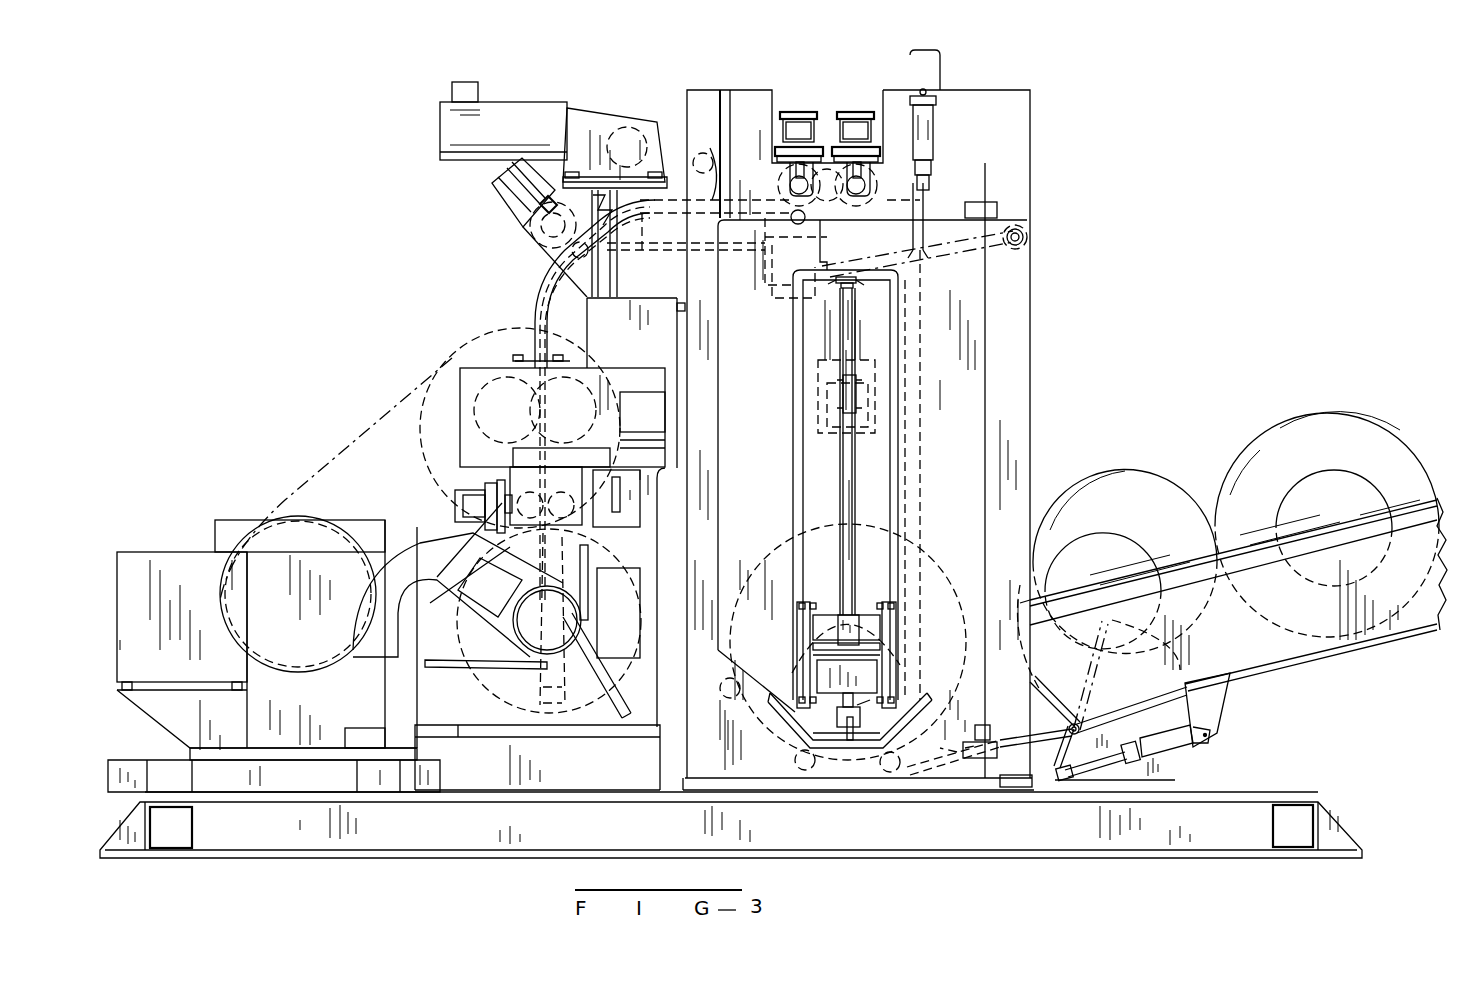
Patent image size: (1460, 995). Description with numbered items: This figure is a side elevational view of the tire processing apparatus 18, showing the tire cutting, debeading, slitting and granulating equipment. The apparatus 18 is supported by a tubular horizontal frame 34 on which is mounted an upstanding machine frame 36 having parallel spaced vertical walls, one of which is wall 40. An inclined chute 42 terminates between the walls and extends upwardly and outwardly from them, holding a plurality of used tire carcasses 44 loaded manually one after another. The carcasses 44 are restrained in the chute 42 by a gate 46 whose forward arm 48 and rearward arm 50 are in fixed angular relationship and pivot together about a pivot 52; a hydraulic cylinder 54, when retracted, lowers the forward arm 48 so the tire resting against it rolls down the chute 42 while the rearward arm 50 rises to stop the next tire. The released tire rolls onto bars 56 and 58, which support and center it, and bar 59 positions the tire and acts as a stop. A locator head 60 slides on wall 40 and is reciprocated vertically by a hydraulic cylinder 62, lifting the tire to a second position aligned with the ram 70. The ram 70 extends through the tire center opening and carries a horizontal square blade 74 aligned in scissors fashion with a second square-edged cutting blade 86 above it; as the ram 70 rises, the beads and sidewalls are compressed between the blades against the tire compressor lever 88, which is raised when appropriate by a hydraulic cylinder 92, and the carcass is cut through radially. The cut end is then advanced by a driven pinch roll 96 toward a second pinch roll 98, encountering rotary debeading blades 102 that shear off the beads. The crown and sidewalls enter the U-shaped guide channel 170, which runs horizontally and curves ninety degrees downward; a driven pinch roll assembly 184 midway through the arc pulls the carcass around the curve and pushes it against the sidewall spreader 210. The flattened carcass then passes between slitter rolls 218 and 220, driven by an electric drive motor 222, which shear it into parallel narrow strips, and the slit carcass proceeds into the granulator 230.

The processing apparatus 18 is at (1095, 175).
The tubular horizontal frame 34 is at (1130, 862).
The upstanding machine frame 36 is at (1032, 337).
The vertical wall 40 is at (962, 386).
The inclined chute 42 is at (1316, 658).
The tire carcasses 44 is at (775, 548).
The gate 46 is at (1047, 742).
The forward arm 48 is at (1062, 700).
The rearward arm 50 is at (1195, 752).
The pivot 52 is at (1078, 735).
The hydraulic cylinder 54 is at (1180, 770).
The bar 56 is at (890, 775).
The bar 58 is at (800, 775).
The bar 59 is at (720, 686).
The locator head 60 is at (803, 680).
The hydraulic cylinder 62 is at (857, 490).
The ram 70 is at (828, 435).
The horizontal square blade 74 is at (826, 366).
The second square-edged cutting blade 86 is at (828, 270).
The tire compressor lever 88 is at (920, 252).
The hydraulic cylinder 92 is at (935, 133).
The pinch roll 96 is at (925, 210).
The second pinch roll 98 is at (775, 188).
The rotary debeading blades 102 is at (826, 237).
The guide channel 170 is at (709, 147).
The driven pinch roll assembly 184 is at (505, 204).
The sidewall spreader 210 is at (536, 309).
The slitter roll 218 is at (612, 388).
The slitter roll 220 is at (455, 347).
The electric drive motor 222 is at (228, 521).
The granulator 230 is at (448, 530).